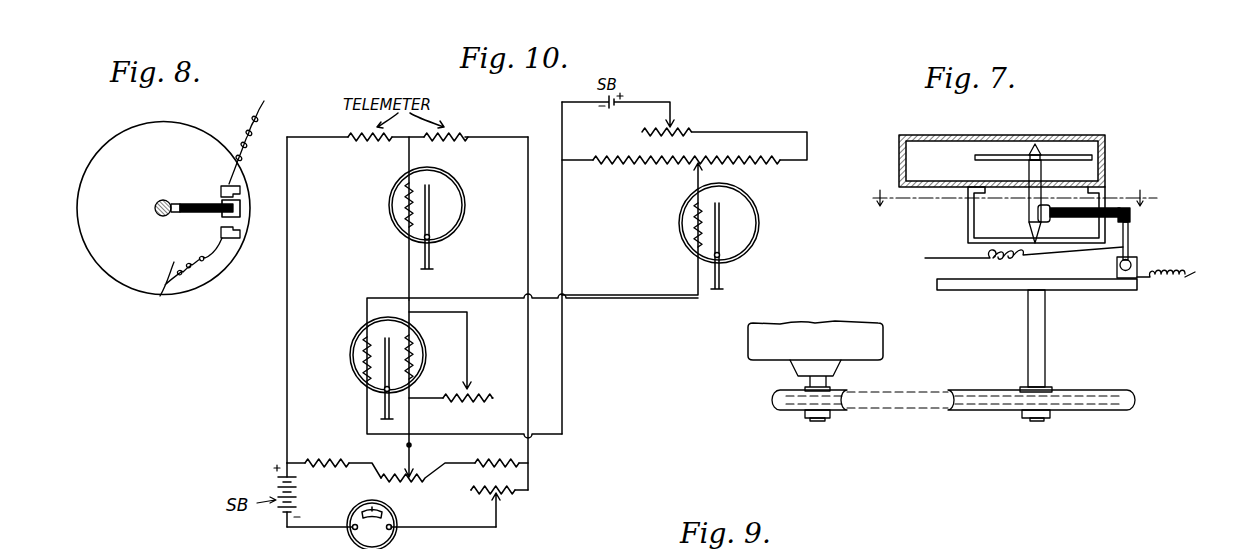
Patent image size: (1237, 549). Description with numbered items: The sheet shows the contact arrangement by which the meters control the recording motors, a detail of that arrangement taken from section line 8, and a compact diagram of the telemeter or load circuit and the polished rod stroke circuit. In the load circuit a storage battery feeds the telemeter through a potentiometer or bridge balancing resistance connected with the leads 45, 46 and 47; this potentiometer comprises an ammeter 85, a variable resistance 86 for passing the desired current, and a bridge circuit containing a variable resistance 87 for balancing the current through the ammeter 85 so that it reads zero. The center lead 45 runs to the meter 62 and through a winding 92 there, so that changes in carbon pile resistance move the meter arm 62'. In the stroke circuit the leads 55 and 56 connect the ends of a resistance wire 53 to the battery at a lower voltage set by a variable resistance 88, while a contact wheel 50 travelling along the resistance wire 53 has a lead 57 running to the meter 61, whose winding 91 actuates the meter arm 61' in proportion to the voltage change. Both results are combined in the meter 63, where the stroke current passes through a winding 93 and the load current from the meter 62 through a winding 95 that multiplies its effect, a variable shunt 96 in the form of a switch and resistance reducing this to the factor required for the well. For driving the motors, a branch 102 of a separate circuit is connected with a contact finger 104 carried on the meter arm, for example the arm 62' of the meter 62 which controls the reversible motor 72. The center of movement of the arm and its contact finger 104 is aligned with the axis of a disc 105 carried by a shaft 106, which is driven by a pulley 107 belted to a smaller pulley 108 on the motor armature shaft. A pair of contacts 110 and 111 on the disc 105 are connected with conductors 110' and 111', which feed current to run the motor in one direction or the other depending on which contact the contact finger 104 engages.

In FIG. 7, the section line 8— 8 is at (1009, 199).
In FIG. 10, the center lead 45 is at (407, 152).
In FIG. 10, the lead 46 is at (527, 217).
In FIG. 10, the lead 47 is at (289, 284).
In FIG. 10, the contact wheel 50 is at (702, 171).
In FIG. 10, the resistance wire 53 is at (626, 167).
In FIG. 10, the lead 55 is at (564, 256).
In FIG. 10, the lead 56 is at (775, 117).
In FIG. 10, the lead 57 is at (696, 185).
In FIG. 10, the electric meter 61 is at (741, 223).
In FIG. 10, the meter arm 61' is at (757, 246).
In FIG. 10, the electric meter 62 is at (444, 205).
In FIG. 7, the electric meter 62 is at (1023, 160).
In FIG. 8, the meter arm 62' is at (140, 206).
In FIG. 10, the meter arm 62' is at (450, 227).
In FIG. 7, the meter arm 62' is at (1042, 172).
In FIG. 10, the electric meter 63 is at (352, 349).
In FIG. 7, the reversible motor 72 is at (815, 371).
In FIG. 10, the ammeter 85 is at (398, 533).
In FIG. 10, the variable resistance 86 is at (505, 493).
In FIG. 10, the variable resistance 87 is at (420, 484).
In FIG. 10, the variable resistance 88 is at (683, 130).
In FIG. 10, the winding 91 is at (692, 233).
In FIG. 10, the winding 92 is at (404, 206).
In FIG. 10, the winding 93 is at (362, 364).
In FIG. 10, the winding 95 is at (413, 351).
In FIG. 10, the variable shunt 96 is at (476, 395).
In FIG. 7, the branch 102 is at (940, 258).
In FIG. 8, the contact finger 104 is at (222, 206).
In FIG. 7, the contact finger 104 is at (1131, 234).
In FIG. 8, the disc 105 is at (139, 276).
In FIG. 7, the shaft 106 is at (1046, 345).
In FIG. 7, the pulley 107 is at (1092, 389).
In FIG. 7, the pulley 108 is at (840, 412).
In FIG. 8, the contact 110 is at (248, 247).
In FIG. 8, the conductor 110' is at (195, 277).
In FIG. 8, the contact 111 is at (250, 174).
In FIG. 8, the conductor 111' is at (268, 140).
In FIG. 7, the conductor 111' is at (1156, 287).